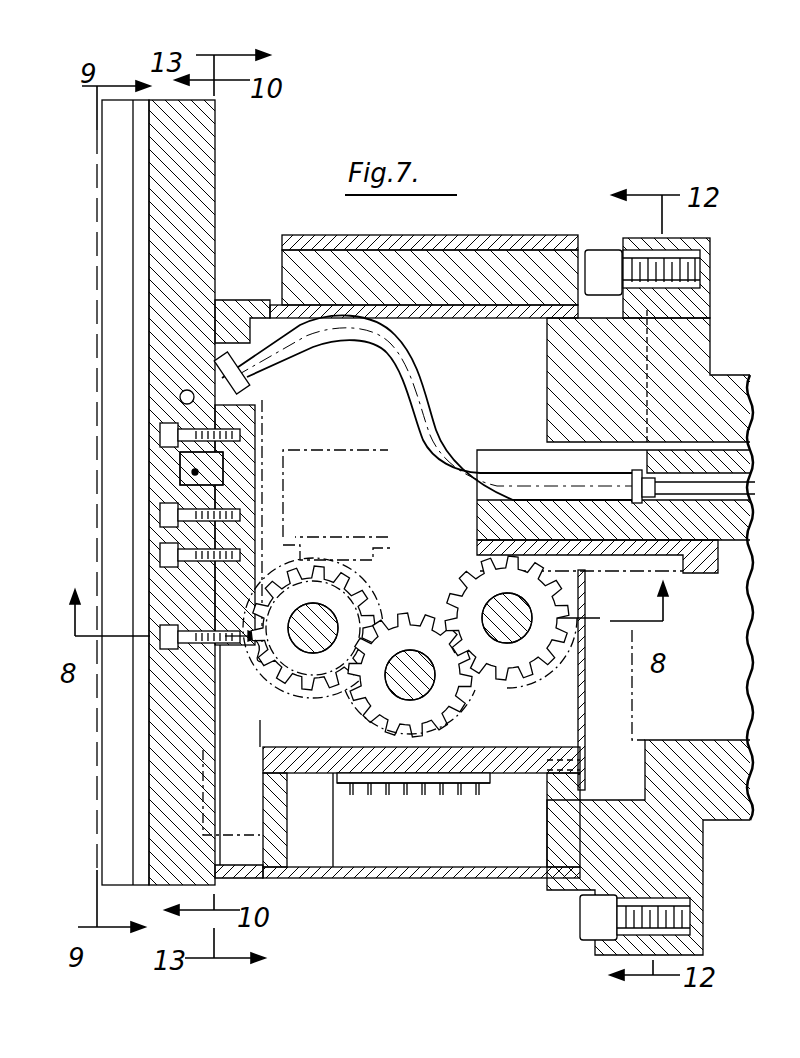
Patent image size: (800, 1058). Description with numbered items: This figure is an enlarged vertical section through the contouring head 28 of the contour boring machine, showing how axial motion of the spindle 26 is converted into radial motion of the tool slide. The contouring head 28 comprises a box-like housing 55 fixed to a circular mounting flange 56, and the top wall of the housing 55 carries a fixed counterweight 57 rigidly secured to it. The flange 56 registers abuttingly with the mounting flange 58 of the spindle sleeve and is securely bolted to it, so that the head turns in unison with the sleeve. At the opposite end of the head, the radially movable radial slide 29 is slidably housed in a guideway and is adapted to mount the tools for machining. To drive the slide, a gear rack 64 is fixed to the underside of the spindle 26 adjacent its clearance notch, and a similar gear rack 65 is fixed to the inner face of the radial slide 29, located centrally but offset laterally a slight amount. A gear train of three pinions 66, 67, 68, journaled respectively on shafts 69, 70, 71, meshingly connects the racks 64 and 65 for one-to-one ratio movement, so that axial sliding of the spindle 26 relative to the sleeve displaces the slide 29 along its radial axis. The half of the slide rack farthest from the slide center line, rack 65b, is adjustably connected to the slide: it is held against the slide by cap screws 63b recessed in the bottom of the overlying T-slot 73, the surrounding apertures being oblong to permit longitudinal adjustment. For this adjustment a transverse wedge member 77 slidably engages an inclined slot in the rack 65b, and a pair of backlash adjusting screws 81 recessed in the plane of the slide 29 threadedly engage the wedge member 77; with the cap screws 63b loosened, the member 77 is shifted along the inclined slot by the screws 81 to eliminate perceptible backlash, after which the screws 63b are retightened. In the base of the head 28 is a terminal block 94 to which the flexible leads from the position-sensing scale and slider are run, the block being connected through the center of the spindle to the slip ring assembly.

The spindle 26 is at (477, 522).
The contouring head 28 is at (374, 884).
The radial slide 29 is at (212, 183).
The box-like housing 55 is at (516, 878).
The mounting flange 56 is at (612, 244).
The counterweight 57 is at (447, 250).
The mounting flange of the spindle sleeve 58 is at (704, 328).
The cap screws 63b is at (236, 556).
The gear rack 64 is at (683, 572).
The gear rack 65 is at (262, 656).
The rack half 65b is at (237, 412).
The pinion 66 is at (486, 576).
The pinion 67 is at (433, 609).
The pinion 68 is at (346, 592).
The shaft 69 is at (511, 645).
The shaft 70 is at (428, 685).
The shaft 71 is at (312, 650).
The T-slot 73 is at (106, 884).
The wedge member 77 is at (228, 474).
The backlash adjusting screws 81 is at (198, 471).
The terminal block 94 is at (468, 792).